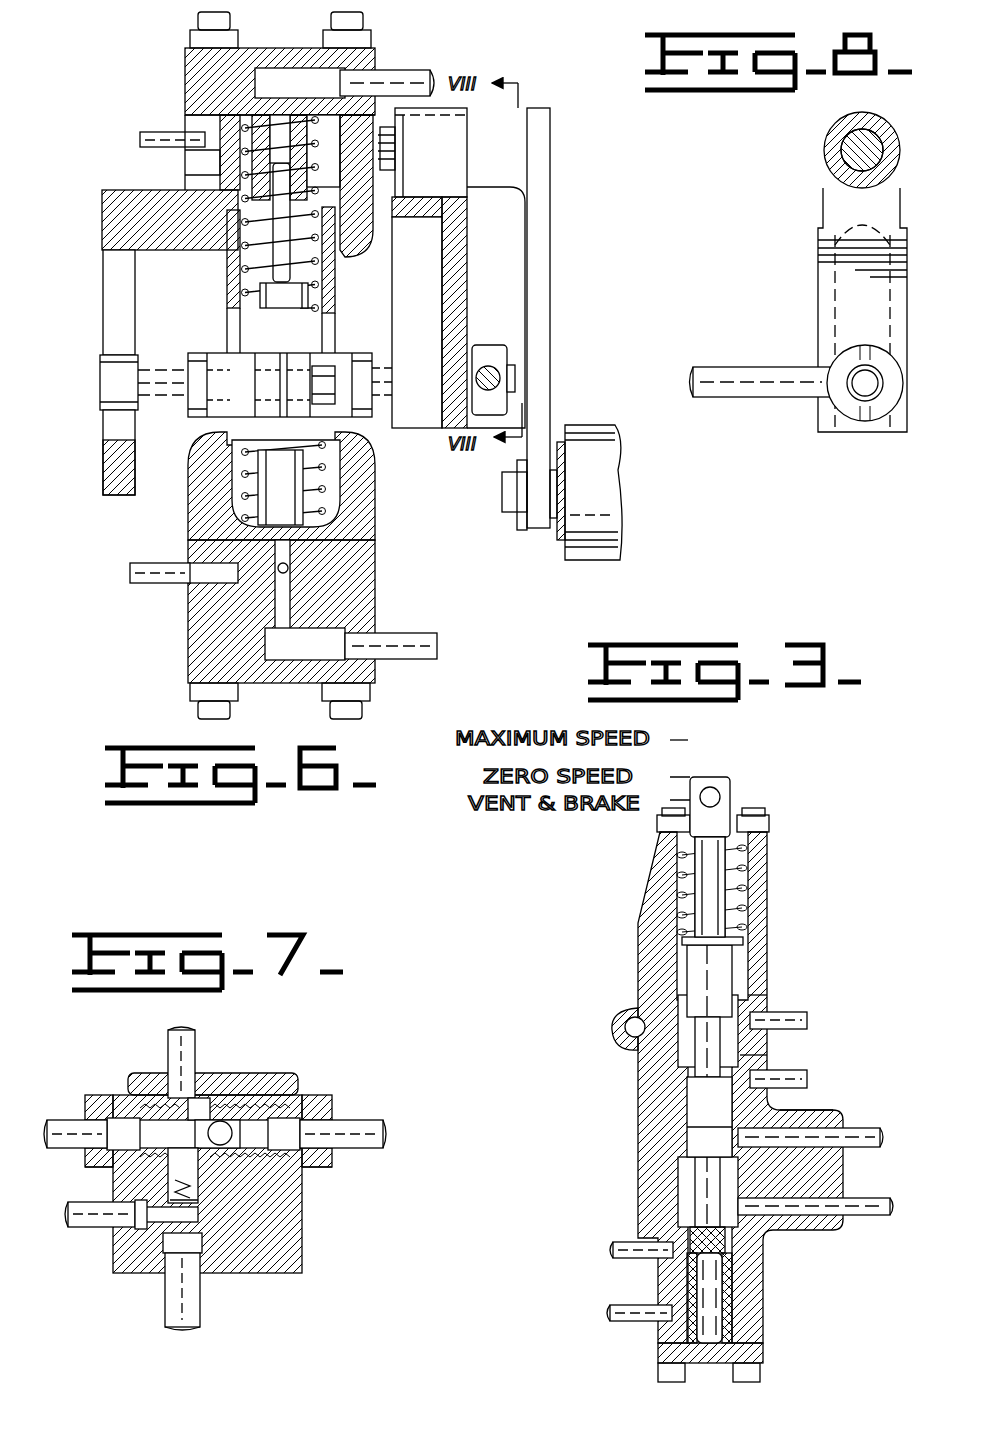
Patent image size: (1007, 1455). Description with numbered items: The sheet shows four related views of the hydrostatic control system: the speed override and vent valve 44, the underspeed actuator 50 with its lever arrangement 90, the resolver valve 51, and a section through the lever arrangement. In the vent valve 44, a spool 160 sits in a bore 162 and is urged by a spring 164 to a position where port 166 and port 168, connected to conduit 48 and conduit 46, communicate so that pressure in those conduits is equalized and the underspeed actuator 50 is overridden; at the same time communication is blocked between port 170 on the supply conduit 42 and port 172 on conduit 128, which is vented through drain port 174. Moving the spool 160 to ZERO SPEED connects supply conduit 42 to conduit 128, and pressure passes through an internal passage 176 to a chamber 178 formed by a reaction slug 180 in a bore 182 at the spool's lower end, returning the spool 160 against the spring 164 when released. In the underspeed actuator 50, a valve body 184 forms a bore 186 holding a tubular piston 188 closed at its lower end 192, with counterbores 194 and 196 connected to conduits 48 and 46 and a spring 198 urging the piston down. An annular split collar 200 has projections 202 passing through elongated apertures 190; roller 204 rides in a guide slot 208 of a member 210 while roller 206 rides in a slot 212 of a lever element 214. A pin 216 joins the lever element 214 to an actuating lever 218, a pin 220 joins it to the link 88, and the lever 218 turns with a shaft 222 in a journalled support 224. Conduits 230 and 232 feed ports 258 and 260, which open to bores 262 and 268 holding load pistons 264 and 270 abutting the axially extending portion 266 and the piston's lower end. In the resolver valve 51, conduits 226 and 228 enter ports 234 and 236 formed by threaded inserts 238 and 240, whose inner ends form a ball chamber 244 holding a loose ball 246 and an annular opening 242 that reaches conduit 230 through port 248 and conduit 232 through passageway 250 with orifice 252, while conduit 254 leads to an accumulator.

In FIG. 6, the valve body 184 is at (185, 58).
In FIG. 6, the port 258 is at (300, 80).
In FIG. 6, the conduit 230 is at (385, 82).
In FIG. 7, the conduit 230 is at (175, 1045).
In FIG. 6, the conduit 46 is at (168, 140).
In FIG. 3, the conduit 46 is at (790, 1076).
In FIG. 6, the counterbore 196 is at (225, 178).
In FIG. 6, the load piston 264 is at (273, 205).
In FIG. 6, the guide slot 208 is at (112, 262).
In FIG. 6, the elongated apertures 190 is at (227, 258).
In FIG. 6, the bore 186 is at (235, 282).
In FIG. 6, the tubular piston 188 is at (233, 318).
In FIG. 6, the annular split collar 200 is at (245, 368).
In FIG. 6, the roller 204 is at (112, 388).
In FIG. 6, the projections 202 is at (207, 418).
In FIG. 6, the member 210 is at (112, 462).
In FIG. 6, the spring 198 is at (232, 498).
In FIG. 6, the conduit 48 is at (175, 575).
In FIG. 3, the conduit 48 is at (790, 1013).
In FIG. 6, the load piston 270 is at (276, 603).
In FIG. 6, the bore 268 is at (288, 568).
In FIG. 6, the port 260 is at (330, 645).
In FIG. 6, the conduit 232 is at (405, 660).
In FIG. 7, the conduit 232 is at (97, 1218).
In FIG. 6, the underspeed actuator 50 is at (180, 662).
In FIG. 6, the lower end 192 is at (368, 538).
In FIG. 6, the counterbore 194 is at (345, 510).
In FIG. 6, the bore 262 is at (262, 130).
In FIG. 6, the pin 216 is at (390, 160).
In FIG. 8, the pin 216 is at (825, 145).
In FIG. 6, the slot 212 is at (438, 230).
In FIG. 8, the slot 212 is at (822, 236).
In FIG. 6, the axially extending portion 266 is at (350, 292).
In FIG. 6, the lever element 214 is at (460, 288).
In FIG. 8, the lever element 214 is at (833, 206).
In FIG. 6, the actuating lever 218 is at (540, 208).
In FIG. 6, the lever arrangement 90 is at (578, 280).
In FIG. 6, the roller 206 is at (418, 362).
In FIG. 8, the roller 206 is at (830, 408).
In FIG. 6, the link 88 is at (490, 366).
In FIG. 8, the link 88 is at (765, 367).
In FIG. 6, the pin 220 is at (515, 378).
In FIG. 6, the journalled support 224 is at (585, 440).
In FIG. 6, the shaft 222 is at (502, 490).
In FIG. 7, the resolver valve 51 is at (303, 1068).
In FIG. 7, the port 234 is at (115, 1100).
In FIG. 7, the port 248 is at (162, 1100).
In FIG. 7, the ball chamber 244 is at (200, 1112).
In FIG. 7, the annular opening 242 is at (210, 1112).
In FIG. 7, the ball 246 is at (232, 1120).
In FIG. 7, the port 236 is at (300, 1102).
In FIG. 7, the conduit 226 is at (75, 1128).
In FIG. 7, the conduit 228 is at (355, 1130).
In FIG. 7, the insert 238 is at (98, 1165).
In FIG. 7, the passageway 250 is at (195, 1170).
In FIG. 7, the orifice 252 is at (198, 1195).
In FIG. 7, the insert 240 is at (320, 1165).
In FIG. 7, the conduit 254 is at (188, 1290).
In FIG. 3, the spring 164 is at (682, 880).
In FIG. 3, the speed override and vent valve 44 is at (783, 917).
In FIG. 3, the spool 160 is at (705, 975).
In FIG. 3, the port 166 is at (745, 1020).
In FIG. 3, the port 168 is at (748, 1082).
In FIG. 3, the bore 162 is at (693, 1090).
In FIG. 3, the port 170 is at (800, 1130).
In FIG. 3, the supply conduit 42 is at (865, 1130).
In FIG. 3, the port 172 is at (800, 1210).
In FIG. 3, the conduit 128 is at (885, 1197).
In FIG. 3, the drain port 174 is at (625, 1242).
In FIG. 3, the internal passage 176 is at (690, 1262).
In FIG. 3, the chamber 178 is at (732, 1250).
In FIG. 3, the reaction slug 180 is at (718, 1300).
In FIG. 3, the bore 182 is at (702, 1318).